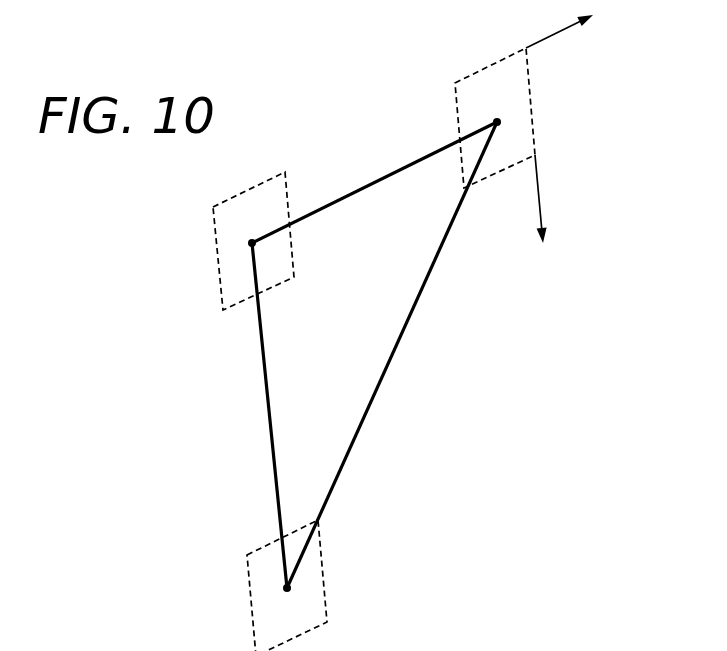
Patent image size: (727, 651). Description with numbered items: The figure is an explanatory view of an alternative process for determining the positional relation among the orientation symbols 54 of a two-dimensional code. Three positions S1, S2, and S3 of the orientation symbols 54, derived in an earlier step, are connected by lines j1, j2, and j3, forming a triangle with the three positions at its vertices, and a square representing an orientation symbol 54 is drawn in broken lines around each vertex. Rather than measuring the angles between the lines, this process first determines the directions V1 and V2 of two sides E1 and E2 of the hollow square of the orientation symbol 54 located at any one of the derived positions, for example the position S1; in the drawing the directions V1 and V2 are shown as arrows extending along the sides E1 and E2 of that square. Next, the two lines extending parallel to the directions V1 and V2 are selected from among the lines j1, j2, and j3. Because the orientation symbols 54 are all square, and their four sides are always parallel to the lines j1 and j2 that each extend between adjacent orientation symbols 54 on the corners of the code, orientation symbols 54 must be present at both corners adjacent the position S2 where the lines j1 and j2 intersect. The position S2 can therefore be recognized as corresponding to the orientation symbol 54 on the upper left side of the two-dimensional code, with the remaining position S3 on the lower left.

The orientation symbol 54 is at (497, 72).
The side of the hollow square E1 is at (535, 97).
The side of the hollow square E2 is at (465, 80).
The direction of side E1 V1 is at (550, 218).
The direction of side E2 V2 is at (576, 26).
The position of orientation symbol S1 is at (465, 136).
The position of orientation symbol S2 is at (255, 245).
The position of orientation symbol S3 is at (291, 532).
The line j1 is at (322, 208).
The line j2 is at (263, 345).
The line j3 is at (385, 367).